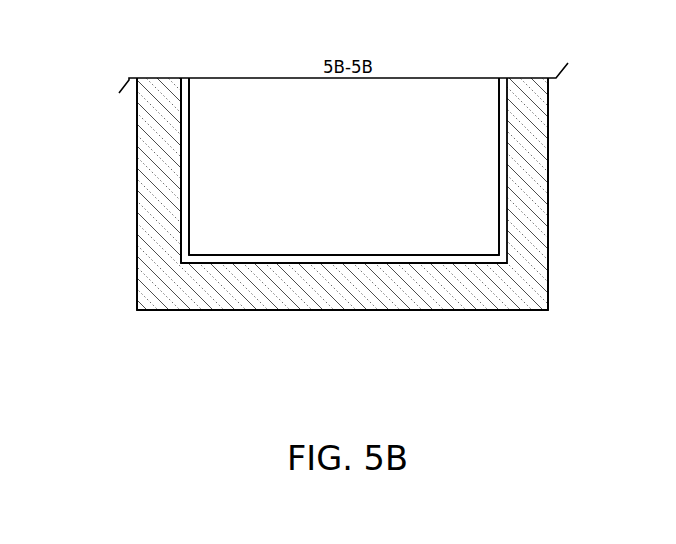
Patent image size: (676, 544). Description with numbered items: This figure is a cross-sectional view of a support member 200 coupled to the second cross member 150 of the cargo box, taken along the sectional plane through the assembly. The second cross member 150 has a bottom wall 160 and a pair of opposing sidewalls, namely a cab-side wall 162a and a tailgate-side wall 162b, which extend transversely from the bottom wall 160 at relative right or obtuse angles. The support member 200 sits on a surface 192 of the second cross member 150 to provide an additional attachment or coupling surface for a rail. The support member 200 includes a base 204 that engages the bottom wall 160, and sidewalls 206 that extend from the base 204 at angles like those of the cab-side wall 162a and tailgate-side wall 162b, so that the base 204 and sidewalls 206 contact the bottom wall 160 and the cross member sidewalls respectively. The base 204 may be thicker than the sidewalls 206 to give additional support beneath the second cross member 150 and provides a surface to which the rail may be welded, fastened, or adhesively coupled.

The second cross member 150 is at (376, 260).
The bottom wall 160 is at (294, 252).
The cab-side wall 162a is at (506, 90).
The tailgate-side wall 162b is at (190, 110).
The surface 192 is at (176, 128).
The support member 200 is at (382, 288).
The base 204 is at (192, 310).
The sidewalls 206 is at (157, 160).